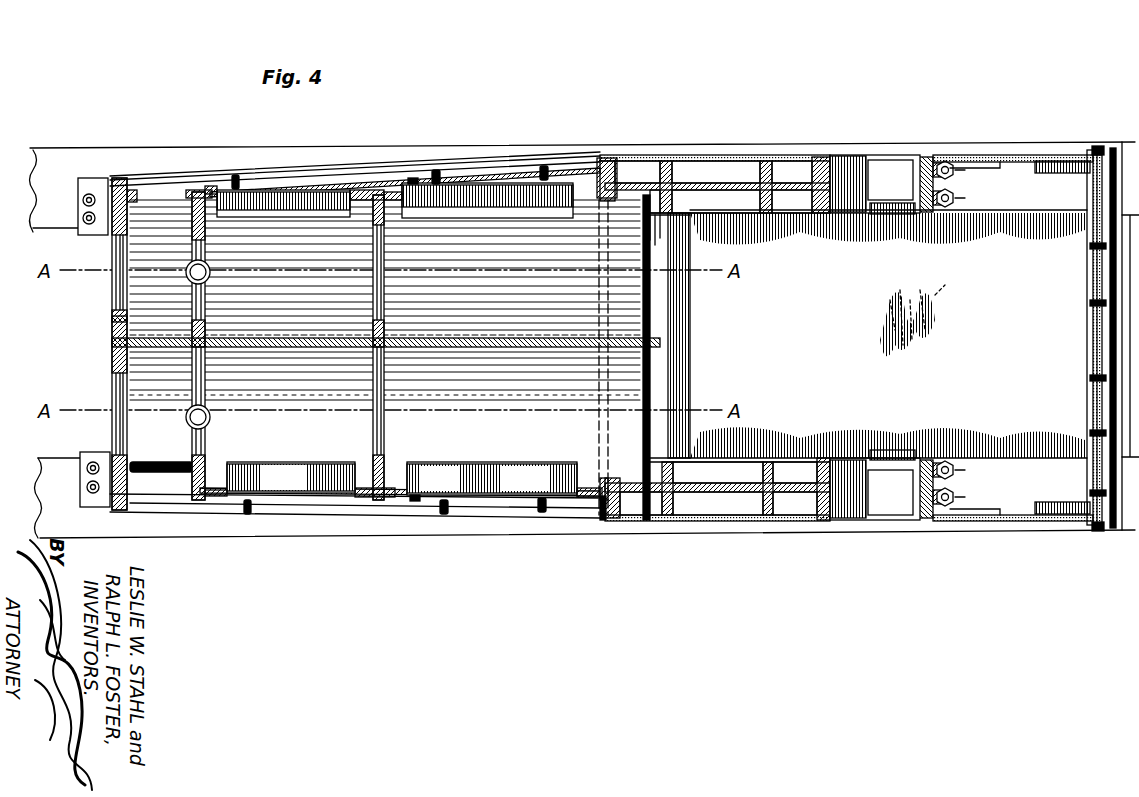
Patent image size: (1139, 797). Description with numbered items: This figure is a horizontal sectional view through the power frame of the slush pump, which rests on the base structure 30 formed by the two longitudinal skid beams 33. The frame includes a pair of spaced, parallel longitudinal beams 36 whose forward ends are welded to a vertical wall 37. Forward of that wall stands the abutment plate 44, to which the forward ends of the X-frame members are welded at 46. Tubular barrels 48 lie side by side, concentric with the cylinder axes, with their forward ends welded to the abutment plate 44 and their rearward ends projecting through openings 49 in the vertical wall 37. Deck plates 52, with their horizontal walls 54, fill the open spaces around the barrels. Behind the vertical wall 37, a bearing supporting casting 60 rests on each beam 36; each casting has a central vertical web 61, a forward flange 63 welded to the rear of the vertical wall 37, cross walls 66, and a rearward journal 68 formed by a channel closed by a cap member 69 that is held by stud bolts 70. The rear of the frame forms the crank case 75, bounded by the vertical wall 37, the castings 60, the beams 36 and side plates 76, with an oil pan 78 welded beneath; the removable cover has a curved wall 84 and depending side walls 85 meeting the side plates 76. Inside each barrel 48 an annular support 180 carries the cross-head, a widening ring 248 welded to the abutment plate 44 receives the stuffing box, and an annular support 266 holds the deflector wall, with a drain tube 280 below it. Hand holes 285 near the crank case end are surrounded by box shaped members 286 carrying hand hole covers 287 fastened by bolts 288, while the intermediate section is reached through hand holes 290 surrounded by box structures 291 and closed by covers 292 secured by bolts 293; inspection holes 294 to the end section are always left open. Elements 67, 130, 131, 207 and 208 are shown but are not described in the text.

The base structure 30 is at (344, 542).
The longitudinal skid beams 33 is at (305, 168).
The longitudinal beams 36 is at (992, 200).
The vertical wall 37 is at (610, 520).
The abutment plate 44 is at (111, 346).
The weld 46 is at (596, 178).
The barrels 48 is at (302, 338).
The openings 49 is at (600, 522).
The deck plates 52 is at (524, 168).
The horizontal walls 54 is at (178, 190).
The bearing supporting castings 60 is at (712, 172).
The central vertical web 61 is at (718, 500).
The flange 63 is at (618, 176).
The cross walls 66 is at (714, 212).
The cover plate 67 is at (684, 185).
The journals 68 is at (824, 508).
The cap members 69 is at (820, 162).
The stud bolts 70 is at (956, 198).
The crank case 75 is at (1045, 172).
The side plates 76 is at (992, 155).
The oil pan 78 is at (1020, 353).
The curved wall 84 is at (1095, 408).
The depending side walls 85 is at (1100, 150).
The slide block 130 is at (846, 220).
The slot 131 is at (886, 224).
The annular support 180 is at (386, 322).
The baffle 207 is at (660, 296).
The baffle wall 208 is at (650, 326).
The widening ring 248 is at (128, 322).
The annular support 266 is at (206, 326).
The drain tube 280 is at (210, 274).
The hand holes 285 is at (414, 178).
The box shaped members 286 is at (390, 192).
The hand hole covers 287 is at (488, 183).
The bolts 288 is at (445, 172).
The hand holes 290 is at (236, 176).
The box structures 291 is at (210, 188).
The covers 292 is at (280, 190).
The bolts 293 is at (363, 190).
The inspection holes 294 is at (132, 190).